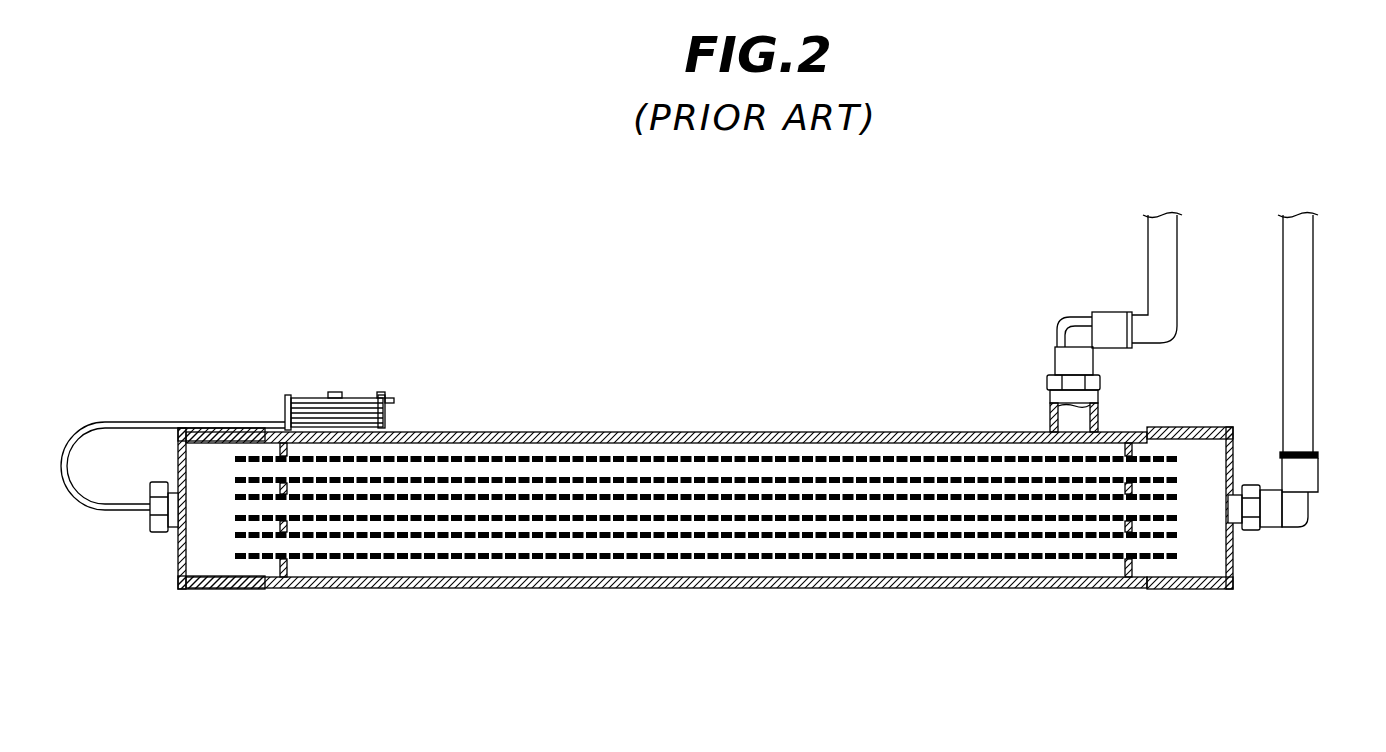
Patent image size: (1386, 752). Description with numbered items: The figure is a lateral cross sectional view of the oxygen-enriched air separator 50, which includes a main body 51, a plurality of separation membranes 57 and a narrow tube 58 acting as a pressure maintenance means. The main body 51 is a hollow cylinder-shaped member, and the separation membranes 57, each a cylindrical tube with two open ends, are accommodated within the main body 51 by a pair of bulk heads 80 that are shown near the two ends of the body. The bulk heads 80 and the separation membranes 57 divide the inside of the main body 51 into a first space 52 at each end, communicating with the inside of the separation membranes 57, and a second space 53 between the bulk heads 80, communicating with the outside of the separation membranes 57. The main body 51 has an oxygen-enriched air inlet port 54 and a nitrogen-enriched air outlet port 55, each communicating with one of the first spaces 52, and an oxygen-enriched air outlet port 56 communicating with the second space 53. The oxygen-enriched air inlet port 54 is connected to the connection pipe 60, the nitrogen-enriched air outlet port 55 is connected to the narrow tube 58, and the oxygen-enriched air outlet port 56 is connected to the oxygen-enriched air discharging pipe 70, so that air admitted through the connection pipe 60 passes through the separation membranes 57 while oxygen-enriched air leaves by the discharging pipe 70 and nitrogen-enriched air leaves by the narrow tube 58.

The oxygen-enriched air separator 50 is at (527, 368).
The main body 51 is at (830, 589).
The first space 52 is at (205, 470).
The second space 53 is at (667, 451).
The oxygen-enriched air inlet port 54 is at (1237, 558).
The nitrogen-enriched air outlet port 55 is at (202, 588).
The oxygen-enriched air outlet port 56 is at (1063, 418).
The separation membranes 57 is at (820, 497).
The narrow tube 58 is at (360, 405).
The connection pipe 60 is at (1302, 358).
The oxygen-enriched air discharging pipe 70 is at (1165, 285).
The bulk heads 80 is at (293, 577).